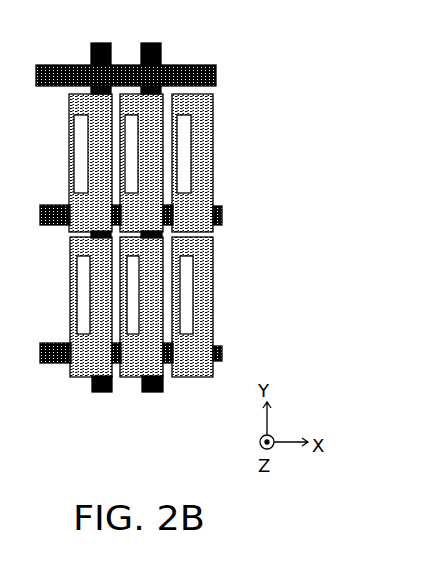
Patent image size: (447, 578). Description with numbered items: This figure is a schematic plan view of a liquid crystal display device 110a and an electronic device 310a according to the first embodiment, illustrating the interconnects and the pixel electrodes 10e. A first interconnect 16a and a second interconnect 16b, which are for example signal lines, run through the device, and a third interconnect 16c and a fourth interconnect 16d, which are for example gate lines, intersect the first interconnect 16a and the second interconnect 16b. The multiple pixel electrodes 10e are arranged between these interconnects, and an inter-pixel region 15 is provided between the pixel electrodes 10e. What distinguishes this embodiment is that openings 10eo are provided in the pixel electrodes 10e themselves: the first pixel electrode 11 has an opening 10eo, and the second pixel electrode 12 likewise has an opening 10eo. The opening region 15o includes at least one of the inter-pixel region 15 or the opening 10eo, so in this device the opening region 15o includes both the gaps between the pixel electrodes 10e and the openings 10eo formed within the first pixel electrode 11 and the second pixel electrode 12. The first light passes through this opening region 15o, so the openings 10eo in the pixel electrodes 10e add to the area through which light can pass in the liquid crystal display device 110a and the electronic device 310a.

The liquid crystal display device 110a is at (162, 247).
The electronic device 310a is at (162, 253).
The pixel electrode 10e is at (87, 103).
The opening 10eo is at (73, 184).
The first interconnect 16a is at (103, 391).
The second interconnect 16b is at (150, 393).
The third interconnect 16c is at (40, 210).
The fourth interconnect 16d is at (40, 349).
The first pixel electrode 11 is at (88, 352).
The second pixel electrode 12 is at (152, 358).
The inter-pixel region 15 is at (117, 300).
The opening region 15o is at (134, 351).